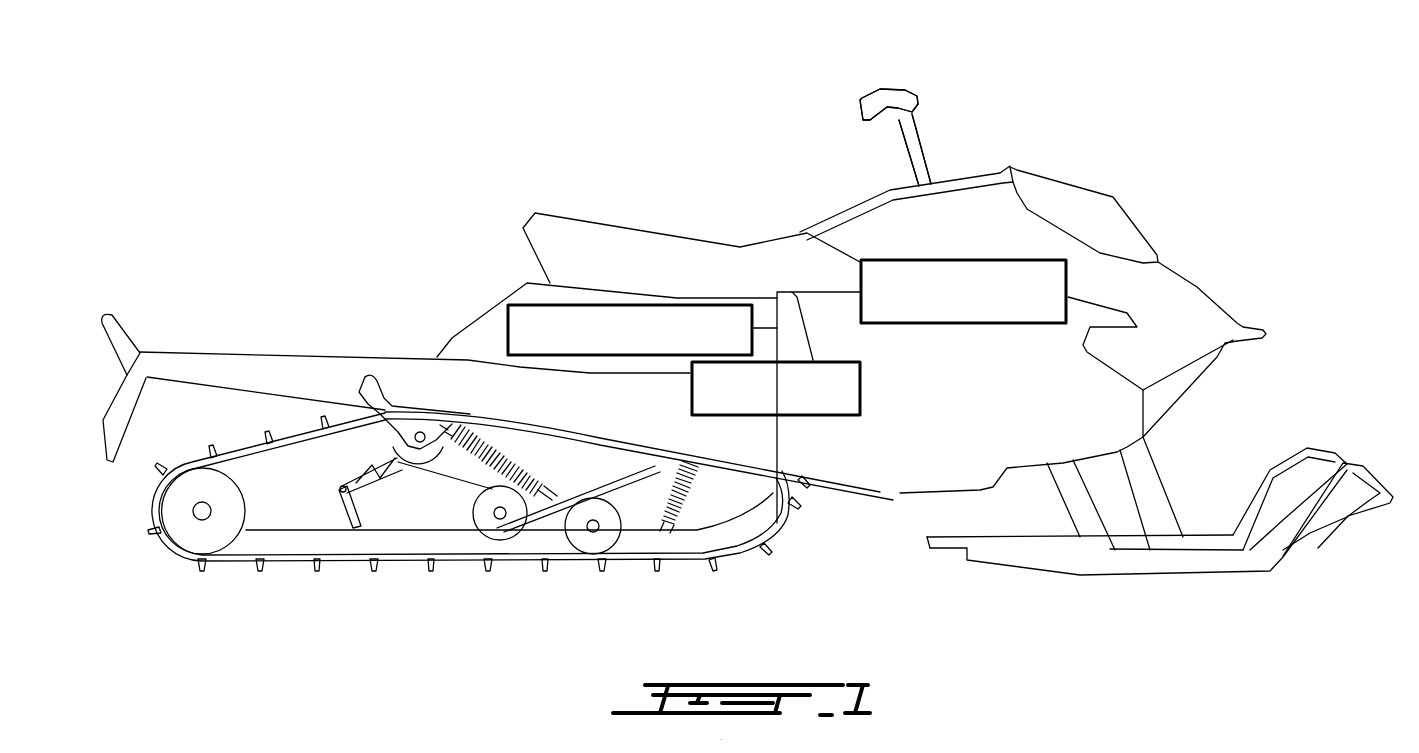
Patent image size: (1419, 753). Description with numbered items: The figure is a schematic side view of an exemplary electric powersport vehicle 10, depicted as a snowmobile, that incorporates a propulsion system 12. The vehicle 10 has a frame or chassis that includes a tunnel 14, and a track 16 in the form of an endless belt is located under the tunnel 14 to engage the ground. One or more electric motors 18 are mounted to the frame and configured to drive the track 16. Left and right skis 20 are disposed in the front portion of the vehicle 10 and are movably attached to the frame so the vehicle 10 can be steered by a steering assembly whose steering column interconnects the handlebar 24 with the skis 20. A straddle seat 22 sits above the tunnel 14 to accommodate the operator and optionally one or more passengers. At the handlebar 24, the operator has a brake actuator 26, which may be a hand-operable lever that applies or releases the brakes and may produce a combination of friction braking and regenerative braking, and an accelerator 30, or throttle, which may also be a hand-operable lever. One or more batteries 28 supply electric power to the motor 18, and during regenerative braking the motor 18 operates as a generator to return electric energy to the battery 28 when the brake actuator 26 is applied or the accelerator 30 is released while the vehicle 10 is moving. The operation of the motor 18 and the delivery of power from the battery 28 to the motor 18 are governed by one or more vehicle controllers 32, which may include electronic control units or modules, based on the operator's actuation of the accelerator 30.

The electric powersport vehicle 10 is at (237, 163).
The propulsion system 12 is at (1132, 298).
The tunnel 14 is at (247, 352).
The track 16 is at (385, 577).
The electric motor 18 is at (862, 388).
The skis 20 is at (1327, 493).
The straddle seat 22 is at (625, 258).
The handlebar 24 is at (903, 107).
The brake actuator 26 is at (862, 99).
The battery 28 is at (537, 320).
The accelerator 30 is at (889, 104).
The vehicle controller 32 is at (1030, 323).